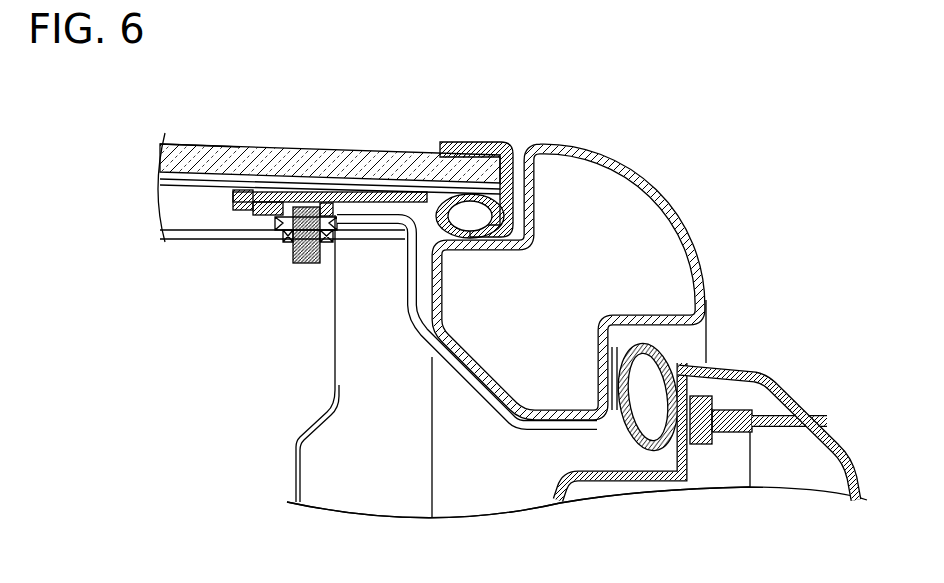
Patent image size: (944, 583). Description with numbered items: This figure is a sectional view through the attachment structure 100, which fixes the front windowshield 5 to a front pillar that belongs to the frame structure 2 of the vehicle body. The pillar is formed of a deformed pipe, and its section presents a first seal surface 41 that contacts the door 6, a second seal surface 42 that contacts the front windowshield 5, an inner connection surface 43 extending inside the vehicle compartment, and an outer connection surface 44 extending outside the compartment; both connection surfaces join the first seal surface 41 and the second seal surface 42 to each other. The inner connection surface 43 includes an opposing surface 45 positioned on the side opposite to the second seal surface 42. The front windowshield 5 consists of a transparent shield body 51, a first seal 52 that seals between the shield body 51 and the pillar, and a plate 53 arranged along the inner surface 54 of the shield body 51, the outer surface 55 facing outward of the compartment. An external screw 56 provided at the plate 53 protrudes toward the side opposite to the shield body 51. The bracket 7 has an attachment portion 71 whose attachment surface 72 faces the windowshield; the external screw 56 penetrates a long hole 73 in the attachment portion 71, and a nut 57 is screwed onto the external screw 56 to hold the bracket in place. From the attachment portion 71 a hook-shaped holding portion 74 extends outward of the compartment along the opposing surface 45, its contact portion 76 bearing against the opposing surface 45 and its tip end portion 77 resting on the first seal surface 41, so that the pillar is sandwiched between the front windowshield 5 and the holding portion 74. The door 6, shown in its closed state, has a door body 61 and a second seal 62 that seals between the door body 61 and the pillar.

The attachment structure 100 is at (694, 132).
The frame structure 2 is at (590, 148).
The front windowshield 5 is at (273, 147).
The shield body 51 is at (440, 150).
The first seal 52 is at (500, 218).
The plate 53 is at (180, 205).
The inner surface 54 is at (162, 191).
The outer surface 55 is at (200, 144).
The external screw 56 is at (286, 252).
The nut 57 is at (276, 232).
The door 6 is at (792, 390).
The door body 61 is at (835, 438).
The second seal 62 is at (560, 489).
The bracket 7 is at (485, 400).
The attachment portion 71 is at (365, 233).
The attachment surface 72 is at (362, 205).
The long hole 73 is at (318, 206).
The holding portion 74 is at (323, 380).
The contact portion 76 is at (565, 427).
The tip end portion 77 is at (598, 380).
The first seal surface 41 is at (614, 343).
The second seal surface 42 is at (515, 228).
The inner connection surface 43 is at (432, 361).
The outer connection surface 44 is at (690, 238).
The opposing surface 45 is at (512, 428).